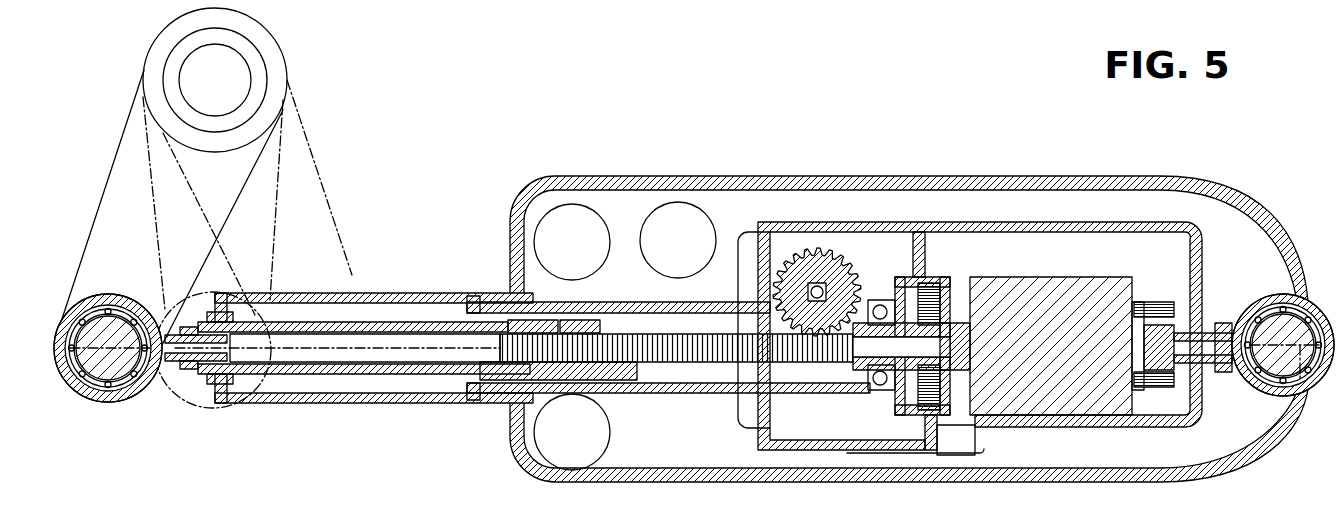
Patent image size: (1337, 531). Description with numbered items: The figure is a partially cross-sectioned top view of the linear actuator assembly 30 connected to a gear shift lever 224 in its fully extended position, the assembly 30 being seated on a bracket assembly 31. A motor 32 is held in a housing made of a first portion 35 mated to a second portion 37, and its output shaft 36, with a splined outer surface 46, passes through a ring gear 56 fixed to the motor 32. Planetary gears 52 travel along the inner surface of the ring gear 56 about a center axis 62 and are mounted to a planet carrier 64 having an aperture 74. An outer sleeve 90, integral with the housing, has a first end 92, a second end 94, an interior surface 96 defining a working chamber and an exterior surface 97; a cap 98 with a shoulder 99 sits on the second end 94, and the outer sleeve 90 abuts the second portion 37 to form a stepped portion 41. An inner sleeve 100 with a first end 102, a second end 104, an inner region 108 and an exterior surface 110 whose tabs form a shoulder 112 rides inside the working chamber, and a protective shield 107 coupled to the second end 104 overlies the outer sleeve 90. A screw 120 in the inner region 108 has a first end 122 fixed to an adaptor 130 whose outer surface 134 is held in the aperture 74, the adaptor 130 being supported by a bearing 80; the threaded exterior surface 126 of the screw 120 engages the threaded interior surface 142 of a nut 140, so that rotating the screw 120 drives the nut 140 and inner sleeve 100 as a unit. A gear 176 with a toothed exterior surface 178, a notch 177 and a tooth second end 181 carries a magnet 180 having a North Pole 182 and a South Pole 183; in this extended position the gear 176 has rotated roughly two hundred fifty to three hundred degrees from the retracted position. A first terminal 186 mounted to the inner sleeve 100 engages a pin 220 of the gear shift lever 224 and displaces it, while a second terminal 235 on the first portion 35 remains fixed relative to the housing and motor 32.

The linear actuator assembly 30 is at (1263, 162).
The bracket assembly 31 is at (1190, 176).
The motor 32 is at (1074, 393).
The first portion 35 is at (1130, 222).
The output shaft 36 is at (960, 345).
The second portion 37 is at (853, 222).
The stepped portion 41 is at (785, 262).
The splined outer surface 46 is at (922, 400).
The planetary gears 52 is at (935, 292).
The ring gear 56 is at (950, 280).
The center axis 62 is at (96, 405).
The planet carrier 64 is at (915, 412).
The aperture 74 is at (1004, 317).
The bearing 80 is at (882, 300).
The outer sleeve 90 is at (519, 328).
The first end 92 is at (755, 298).
The second end 94 is at (462, 328).
The interior surface 96 is at (597, 303).
The exterior surface 97 is at (585, 300).
The cap 98 is at (495, 385).
The shoulder 99 is at (480, 395).
The inner sleeve 100 is at (598, 356).
The first end 102 is at (634, 325).
The second end 104 is at (393, 322).
The protective shield 107 is at (438, 297).
The inner region 108 is at (262, 365).
The exterior surface 110 is at (372, 380).
The shoulder 112 is at (480, 393).
The screw 120 is at (425, 398).
The first end 122 is at (850, 335).
The threaded exterior surface 126 is at (510, 385).
The adaptor 130 is at (912, 262).
The outer surface 134 is at (978, 318).
The nut 140 is at (486, 312).
The threaded interior surface 142 is at (735, 300).
The gear 176 is at (767, 250).
The notch 177 is at (866, 240).
The exterior surface 178 is at (858, 232).
The magnet 180 is at (847, 312).
The second end 181 is at (878, 262).
The North Pole 182 is at (815, 283).
The South Pole 183 is at (812, 270).
The first terminal 186 is at (120, 362).
The pin 220 is at (128, 297).
The gear shift lever 224 is at (107, 193).
The second terminal 235 is at (1294, 323).